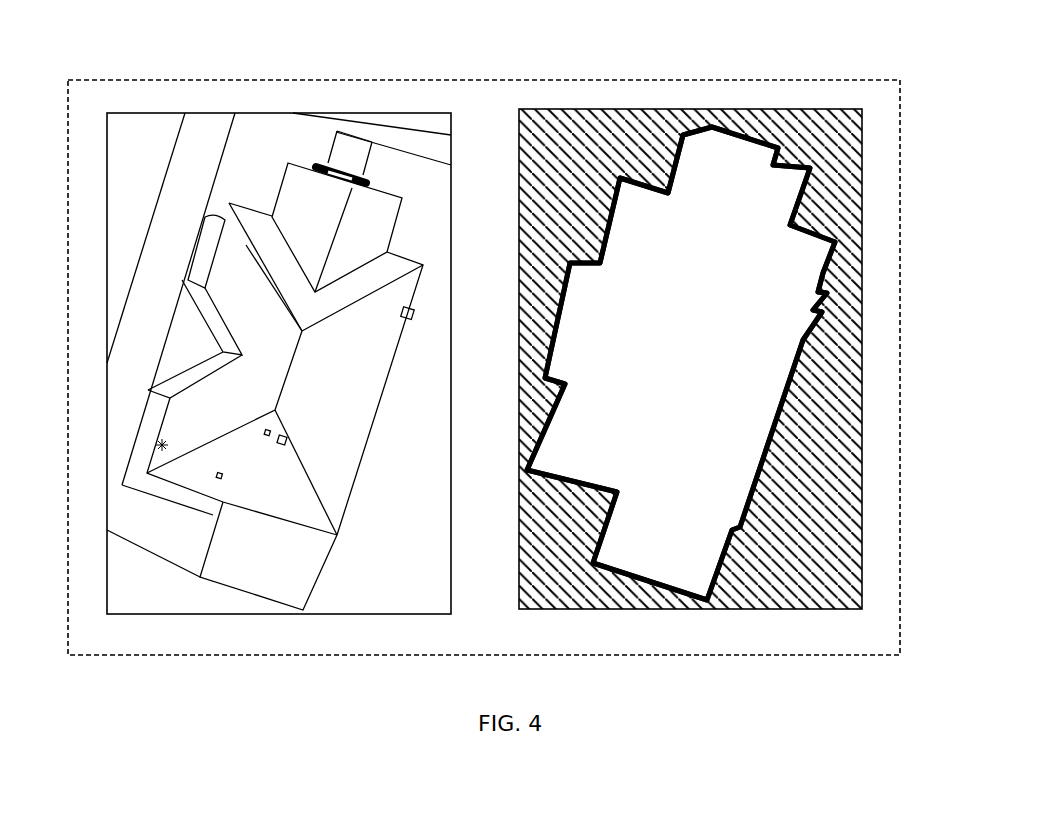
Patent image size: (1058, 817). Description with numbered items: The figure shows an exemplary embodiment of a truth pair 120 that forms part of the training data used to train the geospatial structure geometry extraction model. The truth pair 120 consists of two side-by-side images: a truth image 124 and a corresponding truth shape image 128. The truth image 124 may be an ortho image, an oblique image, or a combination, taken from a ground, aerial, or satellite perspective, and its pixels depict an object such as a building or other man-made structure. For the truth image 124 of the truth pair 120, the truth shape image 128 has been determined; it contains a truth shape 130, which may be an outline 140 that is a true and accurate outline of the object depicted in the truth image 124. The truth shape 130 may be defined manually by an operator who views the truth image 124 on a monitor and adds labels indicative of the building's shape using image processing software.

The truth pair 120 is at (823, 80).
The truth image 124 is at (281, 113).
The truth shape image 128 is at (690, 109).
The truth shape 130 is at (780, 148).
The outline 140 is at (600, 273).